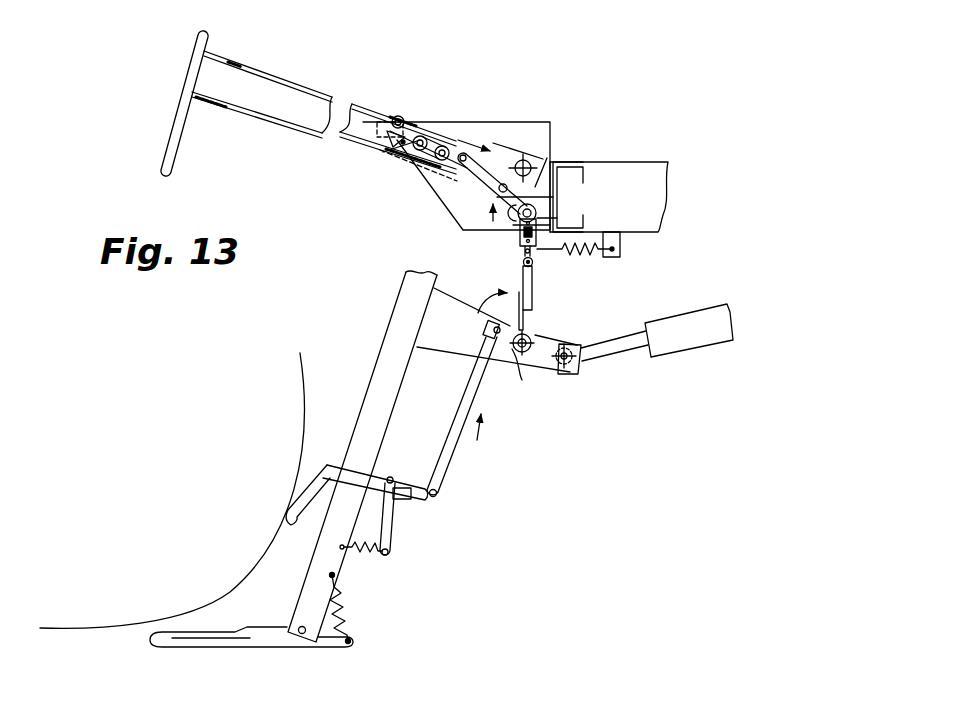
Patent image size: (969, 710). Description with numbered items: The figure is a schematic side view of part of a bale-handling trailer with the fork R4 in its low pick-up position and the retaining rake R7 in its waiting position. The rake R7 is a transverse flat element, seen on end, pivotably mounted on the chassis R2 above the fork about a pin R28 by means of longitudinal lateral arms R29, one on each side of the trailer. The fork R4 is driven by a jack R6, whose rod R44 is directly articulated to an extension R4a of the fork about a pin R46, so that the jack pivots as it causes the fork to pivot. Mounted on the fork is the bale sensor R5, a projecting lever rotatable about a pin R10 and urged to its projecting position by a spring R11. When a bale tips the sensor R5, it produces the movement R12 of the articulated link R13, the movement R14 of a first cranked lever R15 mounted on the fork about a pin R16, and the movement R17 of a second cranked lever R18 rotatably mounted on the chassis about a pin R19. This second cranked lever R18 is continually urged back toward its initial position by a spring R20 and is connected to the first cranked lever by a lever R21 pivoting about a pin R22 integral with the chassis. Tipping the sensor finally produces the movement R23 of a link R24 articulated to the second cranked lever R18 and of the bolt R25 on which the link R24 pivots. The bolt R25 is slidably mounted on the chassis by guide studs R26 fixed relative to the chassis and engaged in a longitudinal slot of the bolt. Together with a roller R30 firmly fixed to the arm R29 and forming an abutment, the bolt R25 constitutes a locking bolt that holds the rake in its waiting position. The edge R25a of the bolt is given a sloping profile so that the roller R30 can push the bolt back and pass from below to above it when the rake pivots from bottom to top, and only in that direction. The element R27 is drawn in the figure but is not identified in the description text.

The chassis R2 is at (559, 154).
The fork R4 is at (368, 366).
The extension of the fork R4a is at (488, 312).
The bale sensor R5 is at (323, 478).
The jack R6 is at (707, 352).
The retaining rake R7 is at (167, 137).
The pin R10 is at (392, 476).
The spring R11 is at (373, 556).
The movement of the articulated link R12 is at (503, 430).
The articulated link R13 is at (465, 402).
The movement of the first cranked lever R14 is at (478, 293).
The first cranked lever R15 is at (512, 350).
The pin R16 is at (527, 338).
The movement of the second cranked lever R17 is at (493, 222).
The second cranked lever R18 is at (533, 200).
The pin R19 is at (534, 218).
The spring R20 is at (588, 253).
The lever R21 is at (534, 285).
The pin R22 is at (522, 262).
The movement of the link R23 is at (459, 140).
The link R24 is at (480, 165).
The bolt R25 is at (448, 158).
The edge of the bolt R25a is at (385, 137).
The guide studs R26 is at (422, 137).
The plate R27 is at (400, 153).
The pin R28 is at (522, 160).
The arm R29 is at (278, 93).
The roller R30 is at (398, 116).
The rod R44 is at (607, 345).
The pin R46 is at (568, 376).